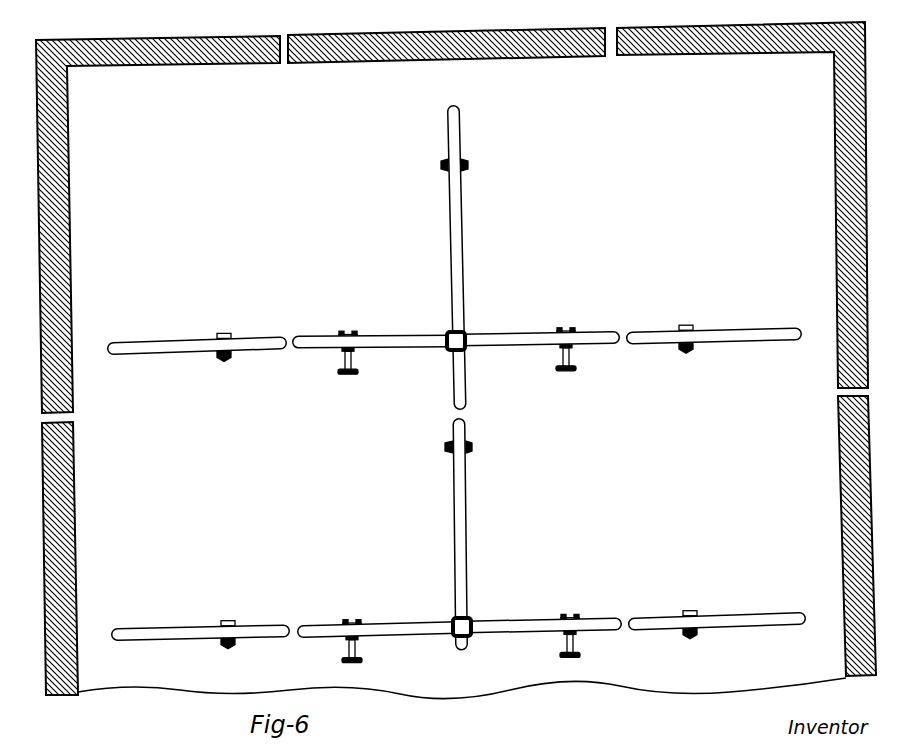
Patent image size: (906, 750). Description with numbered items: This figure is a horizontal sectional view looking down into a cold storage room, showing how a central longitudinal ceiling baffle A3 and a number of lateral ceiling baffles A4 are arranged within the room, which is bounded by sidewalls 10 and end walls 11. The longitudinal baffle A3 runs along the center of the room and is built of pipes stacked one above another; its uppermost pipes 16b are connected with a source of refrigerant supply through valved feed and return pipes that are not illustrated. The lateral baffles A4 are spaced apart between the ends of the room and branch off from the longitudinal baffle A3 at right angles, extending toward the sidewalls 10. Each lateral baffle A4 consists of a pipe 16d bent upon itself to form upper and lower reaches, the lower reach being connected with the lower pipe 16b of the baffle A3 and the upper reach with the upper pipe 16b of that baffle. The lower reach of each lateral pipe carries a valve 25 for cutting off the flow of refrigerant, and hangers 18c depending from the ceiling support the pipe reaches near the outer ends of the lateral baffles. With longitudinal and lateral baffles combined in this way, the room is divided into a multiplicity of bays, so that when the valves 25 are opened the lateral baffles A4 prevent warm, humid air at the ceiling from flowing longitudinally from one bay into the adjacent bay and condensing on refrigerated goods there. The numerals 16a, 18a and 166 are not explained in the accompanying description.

The sidewall 10 is at (58, 268).
The end wall 11 is at (712, 44).
The horizontal pipe section 16a is at (160, 634).
The uppermost pipe 16b is at (461, 291).
The pipe 16d is at (657, 621).
The wall clamp fitting 18a is at (233, 646).
The hanger 18c is at (685, 350).
The valve 25 is at (350, 376).
The cross coupling hub 166 is at (460, 343).
The longitudinal baffle A3 is at (480, 378).
The lateral baffle A4 is at (457, 484).